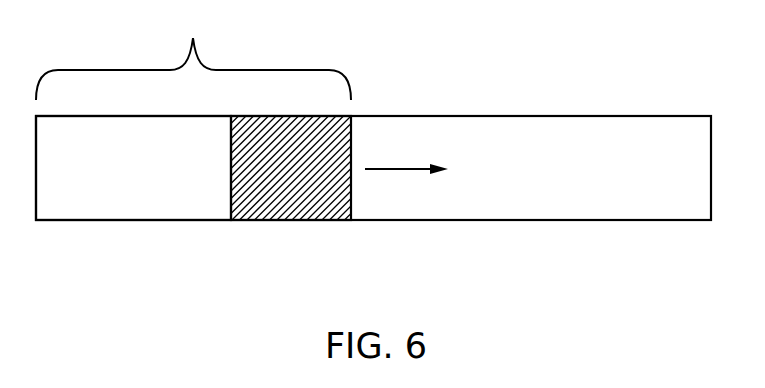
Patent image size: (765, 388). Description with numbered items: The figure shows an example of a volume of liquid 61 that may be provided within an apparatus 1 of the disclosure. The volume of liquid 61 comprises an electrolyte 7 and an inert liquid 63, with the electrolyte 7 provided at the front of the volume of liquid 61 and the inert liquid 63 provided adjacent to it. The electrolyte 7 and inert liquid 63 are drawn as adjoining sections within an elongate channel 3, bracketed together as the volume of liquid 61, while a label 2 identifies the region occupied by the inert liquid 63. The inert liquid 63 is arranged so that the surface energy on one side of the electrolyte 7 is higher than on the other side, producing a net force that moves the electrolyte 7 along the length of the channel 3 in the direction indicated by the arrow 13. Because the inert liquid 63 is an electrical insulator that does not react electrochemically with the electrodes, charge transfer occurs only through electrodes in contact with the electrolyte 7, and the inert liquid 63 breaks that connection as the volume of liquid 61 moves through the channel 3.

The volume of liquid 61 is at (193, 52).
The second section (substrate layer) 2 is at (124, 184).
The apparatus 1 is at (284, 185).
The arrow 13 is at (418, 159).
The inert liquid 63 is at (135, 221).
The electrolyte 7 is at (293, 221).
The channel 3 is at (647, 221).